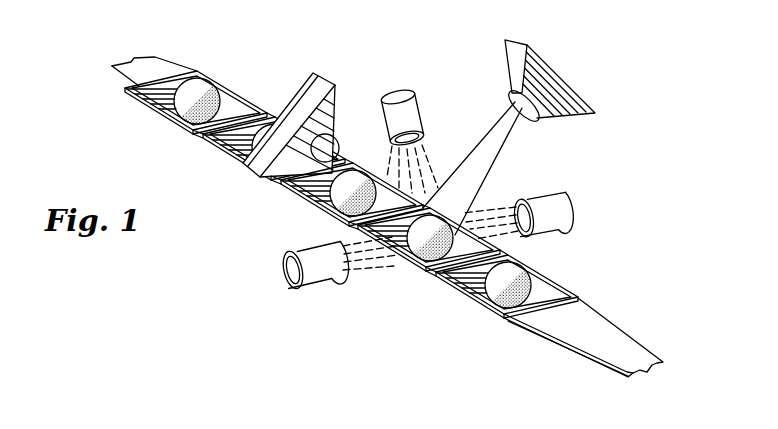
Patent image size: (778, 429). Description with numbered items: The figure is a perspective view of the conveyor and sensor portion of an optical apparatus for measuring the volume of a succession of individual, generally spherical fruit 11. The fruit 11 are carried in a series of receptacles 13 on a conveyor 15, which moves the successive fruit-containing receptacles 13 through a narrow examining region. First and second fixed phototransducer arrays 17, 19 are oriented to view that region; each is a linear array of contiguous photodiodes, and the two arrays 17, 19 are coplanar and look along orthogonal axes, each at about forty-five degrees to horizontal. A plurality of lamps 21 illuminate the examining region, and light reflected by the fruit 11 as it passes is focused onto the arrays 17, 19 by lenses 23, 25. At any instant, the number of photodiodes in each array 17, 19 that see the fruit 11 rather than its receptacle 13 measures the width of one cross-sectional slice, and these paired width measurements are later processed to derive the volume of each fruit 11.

The fruit 11 is at (418, 262).
The receptacles 13 is at (340, 231).
The conveyor 15 is at (590, 342).
The first fixed phototransducer array 17 is at (252, 181).
The second fixed phototransducer array 19 is at (599, 119).
The lamps 21 is at (400, 90).
The lens 23 is at (338, 140).
The lens 25 is at (529, 120).